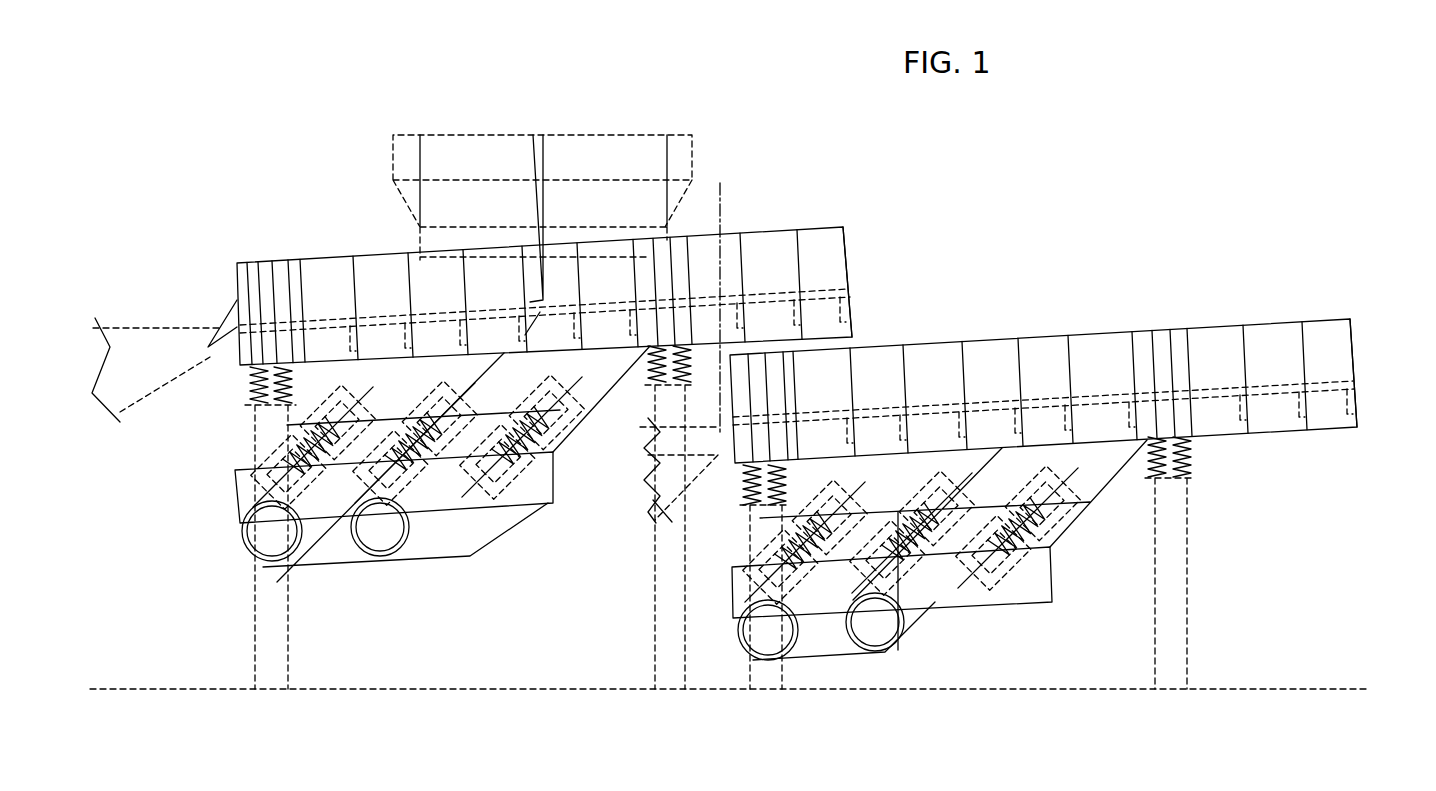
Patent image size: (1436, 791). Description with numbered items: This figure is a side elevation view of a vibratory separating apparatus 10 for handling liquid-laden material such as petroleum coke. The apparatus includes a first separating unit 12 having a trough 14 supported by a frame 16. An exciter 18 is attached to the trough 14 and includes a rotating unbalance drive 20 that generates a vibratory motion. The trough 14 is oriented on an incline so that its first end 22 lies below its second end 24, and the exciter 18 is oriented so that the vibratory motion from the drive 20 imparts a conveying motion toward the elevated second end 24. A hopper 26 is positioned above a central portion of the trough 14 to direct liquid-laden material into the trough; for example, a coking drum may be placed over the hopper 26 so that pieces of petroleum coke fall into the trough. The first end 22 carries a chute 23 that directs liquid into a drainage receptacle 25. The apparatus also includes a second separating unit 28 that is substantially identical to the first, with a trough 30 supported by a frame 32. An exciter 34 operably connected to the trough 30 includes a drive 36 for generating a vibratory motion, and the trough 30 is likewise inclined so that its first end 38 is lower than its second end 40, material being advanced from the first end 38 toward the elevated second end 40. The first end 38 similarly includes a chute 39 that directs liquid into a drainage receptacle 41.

The vibratory separating apparatus 10 is at (965, 190).
The first separating unit 12 is at (327, 283).
The trough 14 is at (377, 267).
The frame 16 is at (280, 632).
The exciter 18 is at (460, 500).
The rotating unbalance drive 20 is at (377, 537).
The first end 22 is at (235, 287).
The chute 23 is at (232, 322).
The second end 24 is at (846, 258).
The drainage receptacle 25 is at (150, 387).
The hopper 26 is at (690, 150).
The second separating unit 28 is at (1105, 355).
The trough 30 is at (1215, 337).
The frame 32 is at (1177, 567).
The exciter 34 is at (940, 592).
The drive 36 is at (877, 640).
The first end 38 is at (737, 450).
The chute 39 is at (728, 425).
The second end 40 is at (1352, 345).
The drainage receptacle 41 is at (643, 508).